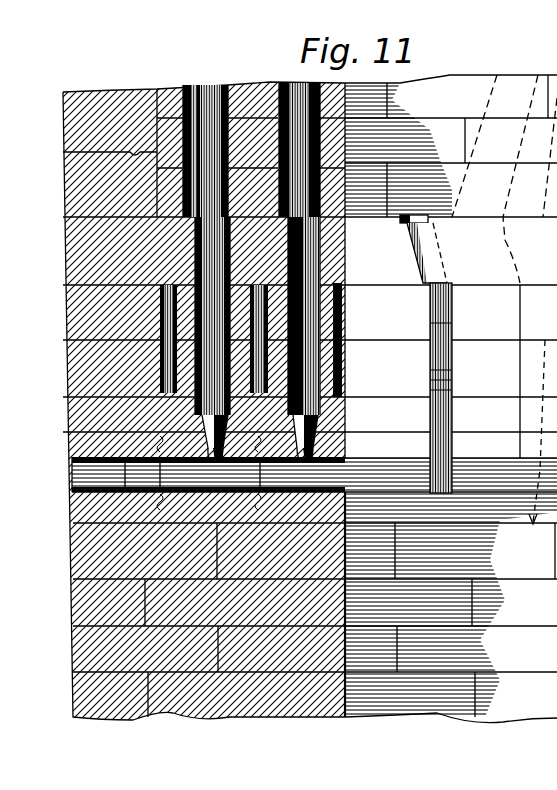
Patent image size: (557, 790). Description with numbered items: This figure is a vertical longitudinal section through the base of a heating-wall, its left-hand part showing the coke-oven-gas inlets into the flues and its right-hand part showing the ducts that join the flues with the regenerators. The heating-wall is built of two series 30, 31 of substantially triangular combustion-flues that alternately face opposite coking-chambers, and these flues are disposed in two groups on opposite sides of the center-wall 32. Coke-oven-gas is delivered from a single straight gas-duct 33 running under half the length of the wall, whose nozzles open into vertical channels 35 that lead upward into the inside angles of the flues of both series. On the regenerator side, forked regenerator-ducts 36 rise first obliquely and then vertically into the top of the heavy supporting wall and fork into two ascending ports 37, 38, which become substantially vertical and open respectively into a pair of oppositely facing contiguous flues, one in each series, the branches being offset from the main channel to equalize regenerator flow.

The series of combustion-flues 30 is at (203, 98).
The series of combustion-flues 31 is at (283, 86).
The center-wall 32 is at (195, 420).
The gas-duct 33 is at (82, 487).
The vertical channels 35 is at (193, 259).
The forked regenerator-ducts 36 is at (443, 493).
The ascending port 37 is at (478, 286).
The ascending port 38 is at (504, 162).